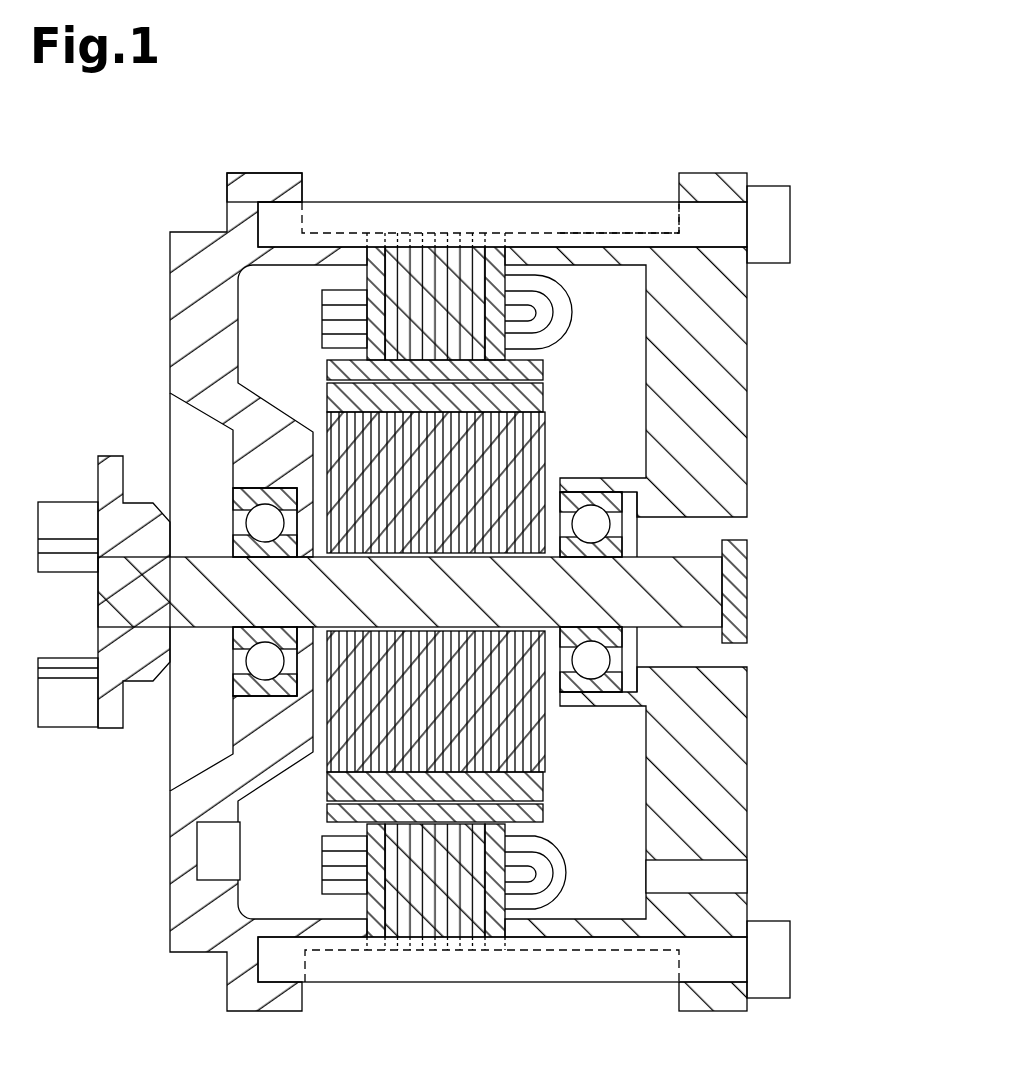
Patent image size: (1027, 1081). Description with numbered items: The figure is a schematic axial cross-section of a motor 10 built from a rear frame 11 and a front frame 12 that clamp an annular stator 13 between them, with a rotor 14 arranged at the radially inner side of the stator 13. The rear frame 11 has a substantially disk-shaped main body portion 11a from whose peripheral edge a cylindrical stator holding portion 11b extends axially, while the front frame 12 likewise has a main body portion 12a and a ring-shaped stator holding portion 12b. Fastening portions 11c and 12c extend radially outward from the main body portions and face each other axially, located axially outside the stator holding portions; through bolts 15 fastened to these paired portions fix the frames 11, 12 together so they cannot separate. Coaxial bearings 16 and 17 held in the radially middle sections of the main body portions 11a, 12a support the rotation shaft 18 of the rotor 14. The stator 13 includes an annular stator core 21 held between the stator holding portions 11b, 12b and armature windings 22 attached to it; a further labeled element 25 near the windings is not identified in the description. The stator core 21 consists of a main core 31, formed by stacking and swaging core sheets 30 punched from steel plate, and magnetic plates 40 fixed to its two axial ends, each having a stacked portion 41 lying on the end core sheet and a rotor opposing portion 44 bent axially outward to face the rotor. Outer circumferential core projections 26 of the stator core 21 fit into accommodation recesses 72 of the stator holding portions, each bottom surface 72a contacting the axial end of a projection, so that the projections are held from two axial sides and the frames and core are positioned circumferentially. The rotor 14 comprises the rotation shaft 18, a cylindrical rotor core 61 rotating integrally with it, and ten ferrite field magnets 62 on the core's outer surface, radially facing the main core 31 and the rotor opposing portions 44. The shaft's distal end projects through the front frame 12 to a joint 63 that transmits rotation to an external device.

The motor 10 is at (74, 276).
The rear frame 11 is at (747, 356).
The main body portion 11a is at (747, 452).
The stator holding portion 11b is at (635, 233).
The fastening portions 11c is at (709, 187).
The front frame 12 is at (170, 346).
The main body portion 12a is at (183, 846).
The stator holding portion 12b is at (338, 233).
The fastening portions 12c is at (251, 185).
The stator 13 is at (322, 307).
The rotor 14 is at (395, 592).
The through bolts 15 is at (578, 212).
The bearing 16 is at (625, 540).
The bearing 17 is at (233, 650).
The rotation shaft 18 is at (648, 618).
The stator core 21 is at (415, 262).
The armature windings 22 is at (568, 848).
The coil end inner portion 25 is at (562, 880).
The outer circumferential core projections 26 is at (458, 238).
The core sheets 30 is at (449, 910).
The main core 31 is at (441, 927).
The magnetic plates 40 is at (368, 906).
The stacked portion 41 is at (370, 853).
The rotor opposing portion 44 is at (332, 813).
The rotor core 61 is at (540, 448).
The field magnets 62 is at (545, 396).
The joint 63 is at (69, 712).
The accommodation recesses 72 is at (435, 261).
The bottom surface 72a is at (377, 247).